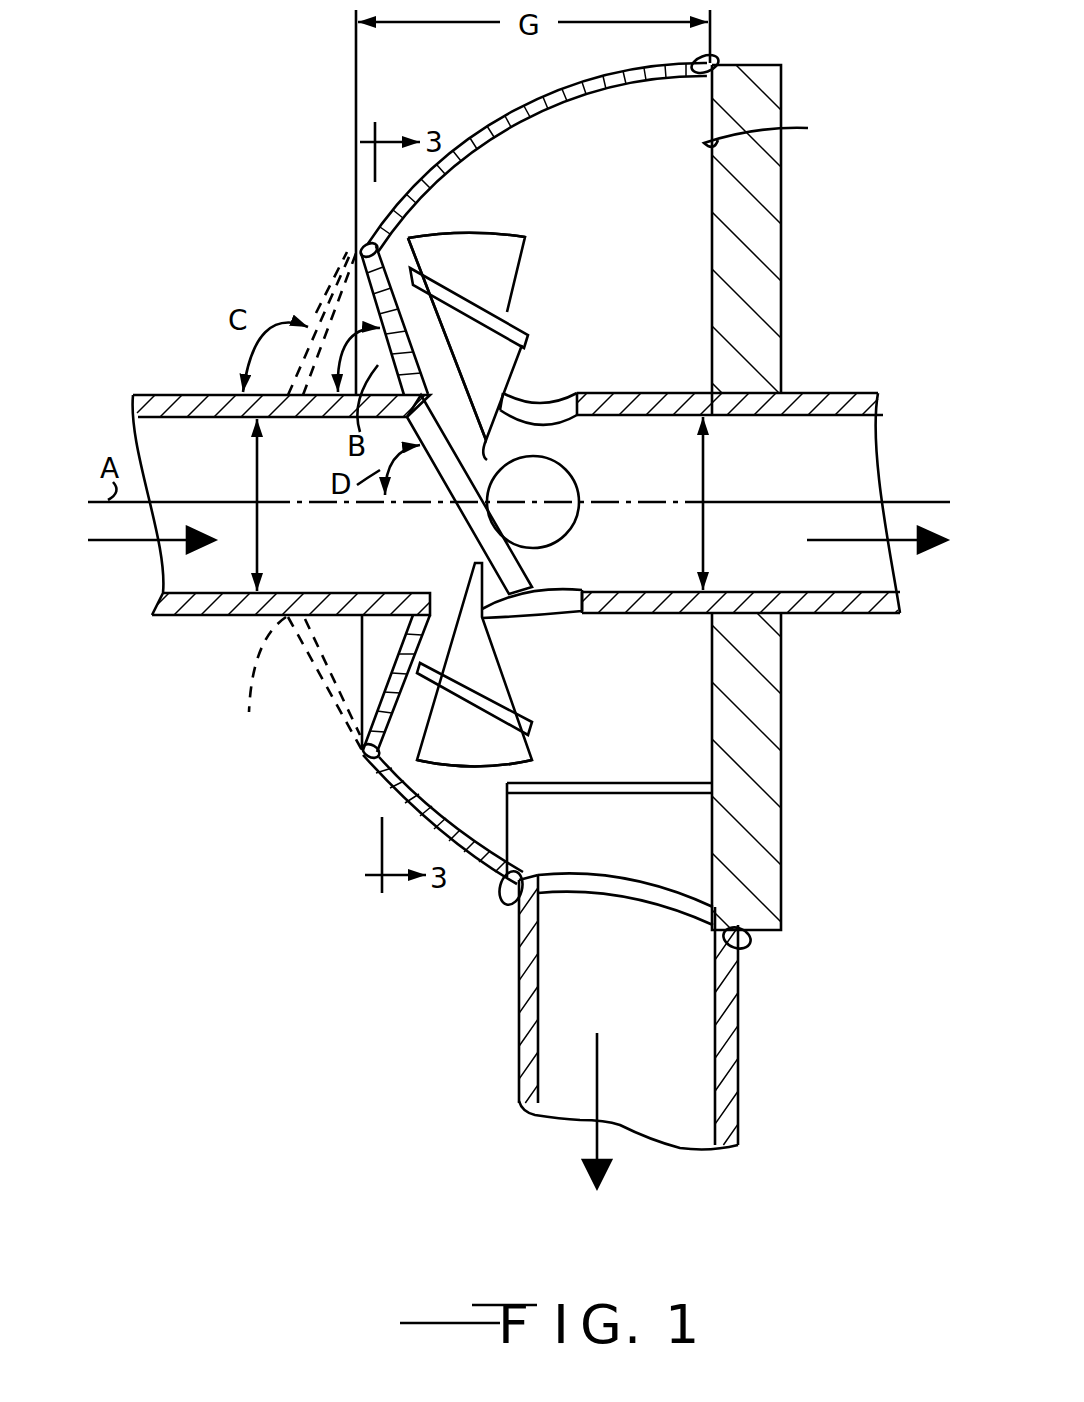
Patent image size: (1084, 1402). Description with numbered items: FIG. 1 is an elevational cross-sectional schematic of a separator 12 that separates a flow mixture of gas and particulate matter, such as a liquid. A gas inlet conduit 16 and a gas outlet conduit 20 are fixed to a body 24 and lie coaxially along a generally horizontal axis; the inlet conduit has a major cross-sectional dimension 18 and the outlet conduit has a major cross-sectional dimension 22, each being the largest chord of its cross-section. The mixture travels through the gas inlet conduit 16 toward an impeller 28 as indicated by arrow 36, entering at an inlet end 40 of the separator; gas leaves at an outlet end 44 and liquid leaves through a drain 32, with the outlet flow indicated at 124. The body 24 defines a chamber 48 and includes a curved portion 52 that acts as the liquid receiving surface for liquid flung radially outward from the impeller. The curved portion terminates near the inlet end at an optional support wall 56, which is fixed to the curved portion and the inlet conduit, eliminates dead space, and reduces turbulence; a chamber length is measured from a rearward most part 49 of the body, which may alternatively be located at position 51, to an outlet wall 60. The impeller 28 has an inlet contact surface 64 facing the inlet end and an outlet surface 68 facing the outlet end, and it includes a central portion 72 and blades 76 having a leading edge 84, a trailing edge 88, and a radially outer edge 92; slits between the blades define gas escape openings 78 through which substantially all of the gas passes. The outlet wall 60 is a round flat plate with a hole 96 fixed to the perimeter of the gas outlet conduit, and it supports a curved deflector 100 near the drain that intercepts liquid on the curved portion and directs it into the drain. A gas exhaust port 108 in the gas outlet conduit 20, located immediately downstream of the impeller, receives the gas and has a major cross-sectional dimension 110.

The separator 12 is at (265, 180).
The gas inlet conduit 16 is at (162, 393).
The major cross-sectional dimension 18 is at (257, 478).
The gas outlet conduit 20 is at (818, 393).
The major cross-sectional dimension 22 is at (705, 541).
The body 24 is at (548, 93).
The impeller 28 is at (460, 210).
The drain 32 is at (738, 1017).
The arrow 36 is at (133, 541).
The inlet end 40 is at (167, 630).
The outlet end 44 is at (851, 632).
The chamber 48 is at (685, 107).
The rearward most part 49 is at (357, 244).
The position 51 is at (293, 684).
The curved portion 52 is at (477, 128).
The support wall 56 is at (373, 297).
The outlet wall 60 is at (776, 130).
The inlet contact surface 64 is at (464, 548).
The outlet surface 68 is at (487, 677).
The central portion 72 is at (487, 463).
The blades 76 is at (500, 230).
The gas escape openings 78 is at (530, 268).
The leading edge 84 is at (518, 363).
The trailing edge 88 is at (446, 336).
The radially outer edge 92 is at (527, 313).
The hole 96 is at (710, 392).
The deflector 100 is at (665, 783).
The gas exhaust port 108 is at (568, 437).
The major cross-sectional dimension 110 is at (580, 457).
The outlet flow 124 is at (848, 540).